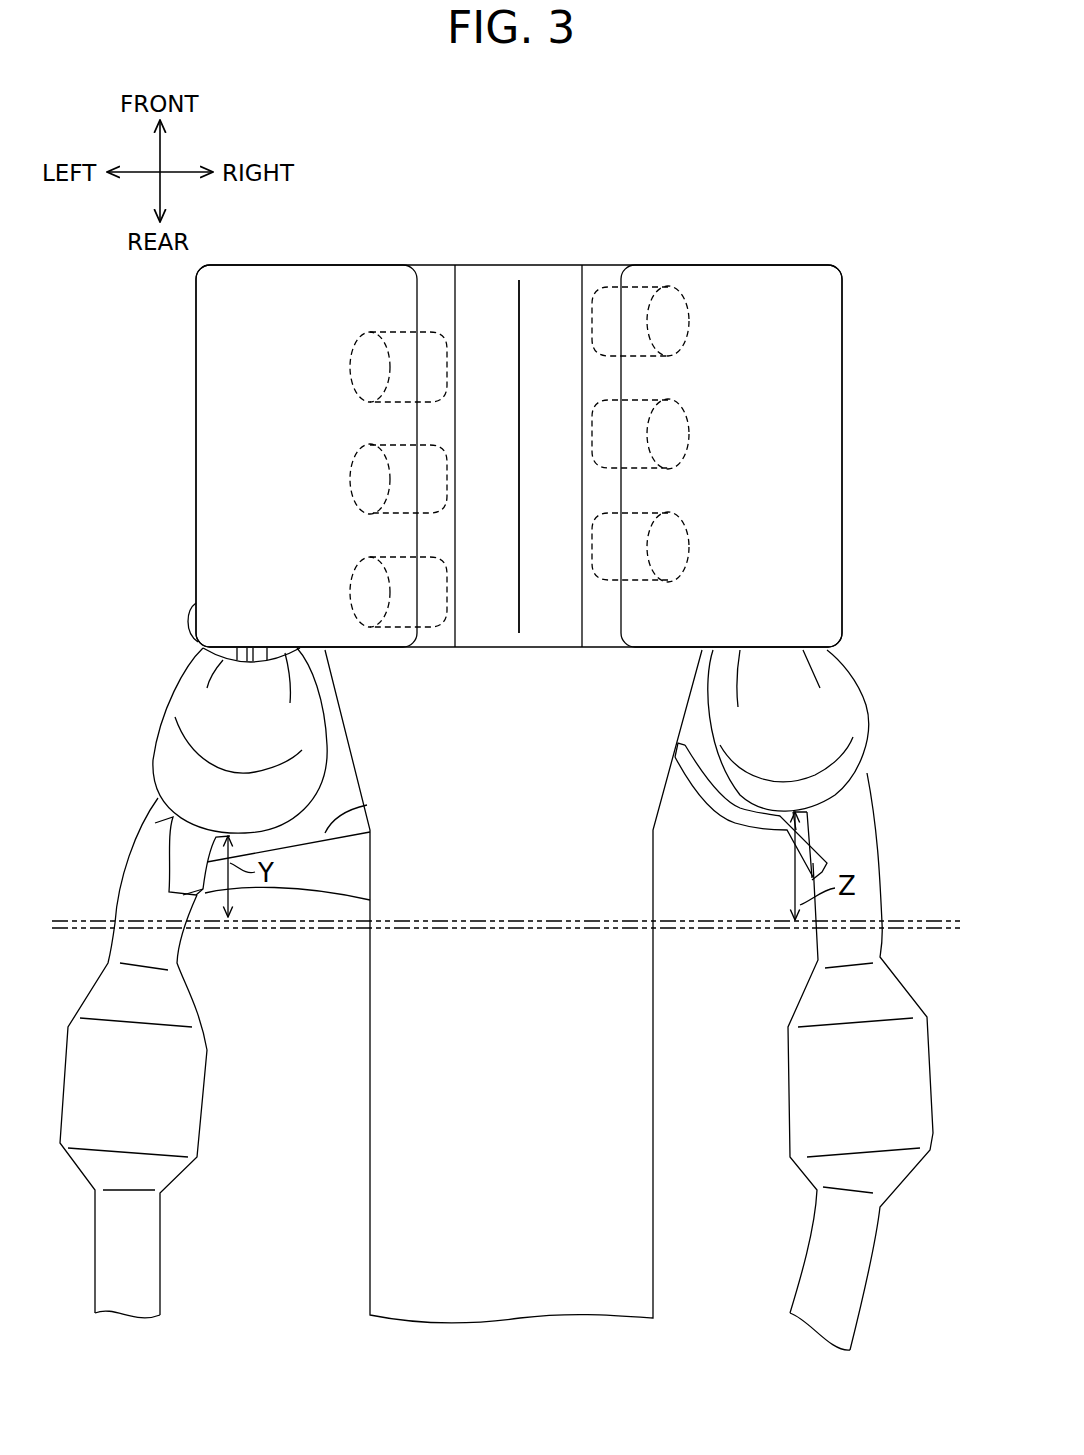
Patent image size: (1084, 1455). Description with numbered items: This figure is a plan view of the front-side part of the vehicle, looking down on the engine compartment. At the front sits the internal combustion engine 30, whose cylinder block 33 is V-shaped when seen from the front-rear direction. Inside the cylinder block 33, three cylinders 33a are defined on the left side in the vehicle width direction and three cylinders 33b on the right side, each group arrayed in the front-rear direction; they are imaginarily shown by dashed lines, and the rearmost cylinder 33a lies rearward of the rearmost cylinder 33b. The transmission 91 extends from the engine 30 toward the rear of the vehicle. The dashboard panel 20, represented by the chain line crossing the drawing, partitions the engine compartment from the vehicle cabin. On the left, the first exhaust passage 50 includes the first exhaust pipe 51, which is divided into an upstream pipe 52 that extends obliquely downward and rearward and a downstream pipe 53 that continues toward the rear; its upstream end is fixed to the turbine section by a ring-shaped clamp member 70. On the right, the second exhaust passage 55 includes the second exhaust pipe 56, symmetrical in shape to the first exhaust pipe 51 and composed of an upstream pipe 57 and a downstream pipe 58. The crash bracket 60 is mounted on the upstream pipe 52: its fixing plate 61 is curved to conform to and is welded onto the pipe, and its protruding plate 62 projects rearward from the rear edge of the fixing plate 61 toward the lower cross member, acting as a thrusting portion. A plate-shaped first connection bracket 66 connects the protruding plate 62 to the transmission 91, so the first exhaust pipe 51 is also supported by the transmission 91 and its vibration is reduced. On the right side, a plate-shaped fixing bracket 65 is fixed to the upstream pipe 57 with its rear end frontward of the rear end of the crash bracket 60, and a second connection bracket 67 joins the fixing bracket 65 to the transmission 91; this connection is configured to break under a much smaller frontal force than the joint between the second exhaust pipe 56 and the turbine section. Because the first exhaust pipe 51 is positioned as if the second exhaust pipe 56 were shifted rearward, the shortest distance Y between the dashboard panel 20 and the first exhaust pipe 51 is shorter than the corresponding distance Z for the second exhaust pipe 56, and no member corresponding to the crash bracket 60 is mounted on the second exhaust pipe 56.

The dashboard panel 20 is at (557, 930).
The internal combustion engine 30 is at (553, 489).
The cylinder block 33 is at (495, 648).
The cylinders 33a is at (352, 380).
The cylinders 33b is at (683, 520).
The first exhaust passage 50 is at (190, 910).
The first exhaust pipe 51 is at (207, 1067).
The upstream pipe 52 is at (155, 805).
The downstream pipe 53 is at (112, 932).
The second exhaust passage 55 is at (826, 949).
The second exhaust pipe 56 is at (787, 1077).
The upstream pipe 57 is at (873, 810).
The downstream pipe 58 is at (883, 937).
The crash bracket 60 is at (160, 913).
The fixing plate 61 is at (145, 820).
The protruding plate 62 is at (183, 895).
The fixing bracket 65 is at (783, 822).
The first connection bracket 66 is at (335, 828).
The second connection bracket 67 is at (705, 808).
The clamp member 70 is at (188, 620).
The transmission 91 is at (653, 956).